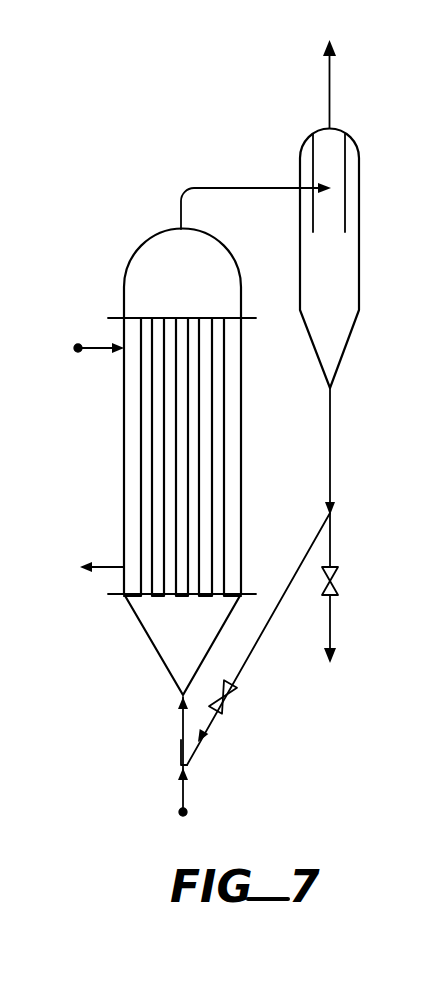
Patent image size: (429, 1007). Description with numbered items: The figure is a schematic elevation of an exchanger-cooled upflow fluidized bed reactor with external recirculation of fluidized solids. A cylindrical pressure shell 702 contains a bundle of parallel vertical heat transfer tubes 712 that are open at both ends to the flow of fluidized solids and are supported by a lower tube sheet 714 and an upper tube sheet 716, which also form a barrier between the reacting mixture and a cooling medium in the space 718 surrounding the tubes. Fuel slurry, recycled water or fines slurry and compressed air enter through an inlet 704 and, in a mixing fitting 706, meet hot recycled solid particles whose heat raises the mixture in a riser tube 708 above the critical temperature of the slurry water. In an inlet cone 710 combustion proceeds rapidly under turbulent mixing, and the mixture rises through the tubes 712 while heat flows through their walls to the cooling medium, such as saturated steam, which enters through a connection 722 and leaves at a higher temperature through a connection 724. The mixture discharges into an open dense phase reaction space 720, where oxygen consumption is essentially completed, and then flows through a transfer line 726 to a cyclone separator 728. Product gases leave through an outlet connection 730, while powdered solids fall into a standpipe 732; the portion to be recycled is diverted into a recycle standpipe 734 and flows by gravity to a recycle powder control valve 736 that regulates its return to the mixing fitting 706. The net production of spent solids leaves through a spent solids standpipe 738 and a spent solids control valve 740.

The cylindrical pressure shell 702 is at (122, 285).
The inlet 704 is at (185, 798).
The mixing fitting 706 is at (197, 757).
The riser tube 708 is at (182, 723).
The inlet cone 710 is at (170, 638).
The heat transfer tubes 712 is at (142, 525).
The lower tube sheet 714 is at (230, 593).
The upper tube sheet 716 is at (228, 322).
The space surrounding the tubes 718 is at (132, 427).
The open dense phase reaction space 720 is at (170, 263).
The connection 722 is at (96, 350).
The connection 724 is at (105, 568).
The transfer line 726 is at (221, 187).
The cyclone separator 728 is at (300, 274).
The outlet connection 730 is at (328, 98).
The standpipe 732 is at (330, 443).
The recycle standpipe 734 is at (283, 595).
The recycle powder control valve 736 is at (238, 688).
The spent solids standpipe 738 is at (333, 540).
The spent solids control valve 740 is at (340, 587).